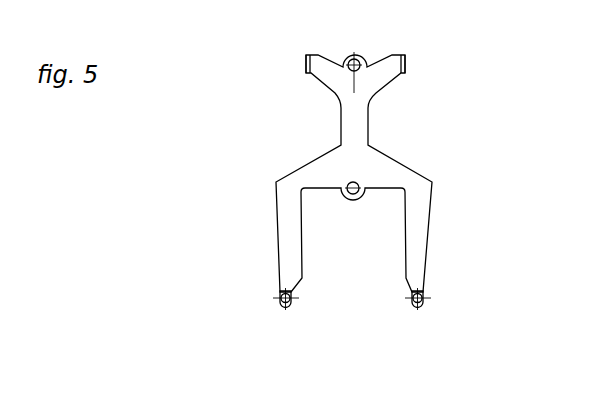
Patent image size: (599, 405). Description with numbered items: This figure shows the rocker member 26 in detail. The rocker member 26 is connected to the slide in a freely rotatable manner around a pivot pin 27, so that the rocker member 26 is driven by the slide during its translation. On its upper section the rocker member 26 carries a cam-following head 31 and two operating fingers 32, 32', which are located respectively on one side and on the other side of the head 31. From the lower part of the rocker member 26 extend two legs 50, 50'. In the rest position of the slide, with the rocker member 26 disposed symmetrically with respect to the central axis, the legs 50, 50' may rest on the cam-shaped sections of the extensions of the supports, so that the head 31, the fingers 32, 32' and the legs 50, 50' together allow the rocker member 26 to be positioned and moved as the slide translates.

The rocker member 26 is at (403, 163).
The pivot pin 27 is at (353, 168).
The cam-following head 31 is at (354, 58).
The operating finger 32 is at (438, 60).
The operating finger 32' is at (271, 57).
The leg 50 is at (402, 320).
The leg 50' is at (305, 320).